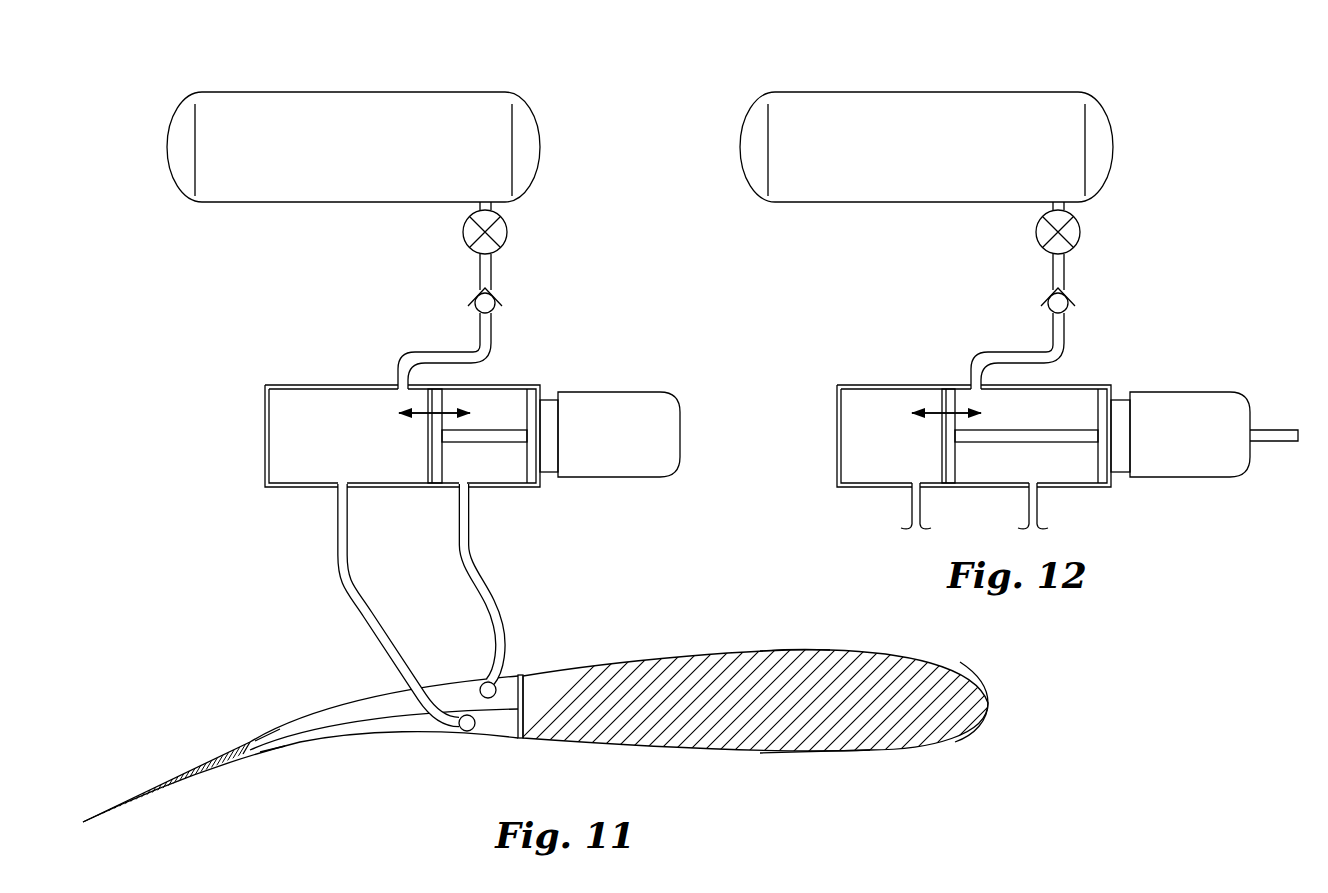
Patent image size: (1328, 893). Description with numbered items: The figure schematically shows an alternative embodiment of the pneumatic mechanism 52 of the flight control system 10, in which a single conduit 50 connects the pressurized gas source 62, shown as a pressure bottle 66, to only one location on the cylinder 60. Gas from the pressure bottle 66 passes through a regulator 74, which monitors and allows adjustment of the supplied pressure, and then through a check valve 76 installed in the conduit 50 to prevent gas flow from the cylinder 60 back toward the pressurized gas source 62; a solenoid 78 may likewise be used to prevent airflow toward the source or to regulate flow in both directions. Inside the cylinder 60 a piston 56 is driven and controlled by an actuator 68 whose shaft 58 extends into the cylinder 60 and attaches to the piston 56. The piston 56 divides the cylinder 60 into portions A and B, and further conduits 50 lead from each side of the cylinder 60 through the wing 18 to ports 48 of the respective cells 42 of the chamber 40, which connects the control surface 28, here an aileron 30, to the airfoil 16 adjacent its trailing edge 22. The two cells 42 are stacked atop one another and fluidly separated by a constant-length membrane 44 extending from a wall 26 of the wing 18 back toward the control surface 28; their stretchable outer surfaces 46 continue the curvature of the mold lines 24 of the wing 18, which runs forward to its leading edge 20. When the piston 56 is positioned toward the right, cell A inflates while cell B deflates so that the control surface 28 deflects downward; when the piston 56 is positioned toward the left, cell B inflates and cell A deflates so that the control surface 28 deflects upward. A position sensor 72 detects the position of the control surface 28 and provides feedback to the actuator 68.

In FIG. 11, the flight control system 10 is at (183, 608).
In FIG. 11, the airfoil 16 is at (797, 705).
In FIG. 11, the aircraft wing 18 is at (797, 705).
In FIG. 11, the leading edge 20 is at (988, 712).
In FIG. 11, the trailing edge 22 is at (80, 824).
In FIG. 11, the mold lines 24 is at (798, 653).
In FIG. 11, the wall 26 is at (518, 737).
In FIG. 11, the control surface 28 is at (286, 754).
In FIG. 11, the aileron 30 is at (286, 754).
In FIG. 11, the chamber 40 is at (313, 713).
In FIG. 11, the cells 42 is at (377, 703).
In FIG. 11, the membrane 44 is at (330, 730).
In FIG. 11, the outer surfaces 46 is at (267, 732).
In FIG. 11, the ports 48 is at (482, 681).
In FIG. 11, the conduits 50 is at (488, 270).
In FIG. 12, the conduits 50 is at (989, 391).
In FIG. 11, the pneumatic mechanism 52 is at (567, 74).
In FIG. 12, the pneumatic mechanism 52 is at (971, 174).
In FIG. 11, the piston 56 is at (427, 463).
In FIG. 12, the piston 56 is at (942, 467).
In FIG. 11, the shaft 58 is at (503, 435).
In FIG. 12, the shaft 58 is at (1091, 445).
In FIG. 11, the cylinder 60 is at (265, 429).
In FIG. 12, the cylinder 60 is at (837, 429).
In FIG. 11, the pressurized gas source 62 is at (353, 119).
In FIG. 12, the pressurized gas source 62 is at (926, 119).
In FIG. 11, the pressure bottle 66 is at (294, 80).
In FIG. 12, the pressure bottle 66 is at (926, 119).
In FIG. 11, the actuator 68 is at (610, 434).
In FIG. 12, the actuator 68 is at (1204, 434).
In FIG. 11, the position sensor 72 is at (513, 700).
In FIG. 11, the regulator 74 is at (505, 230).
In FIG. 12, the regulator 74 is at (1084, 228).
In FIG. 11, the check valve 76 is at (528, 297).
In FIG. 12, the check valve 76 is at (1101, 297).
In FIG. 11, the solenoid 78 is at (498, 290).
In FIG. 12, the solenoid 78 is at (1101, 297).